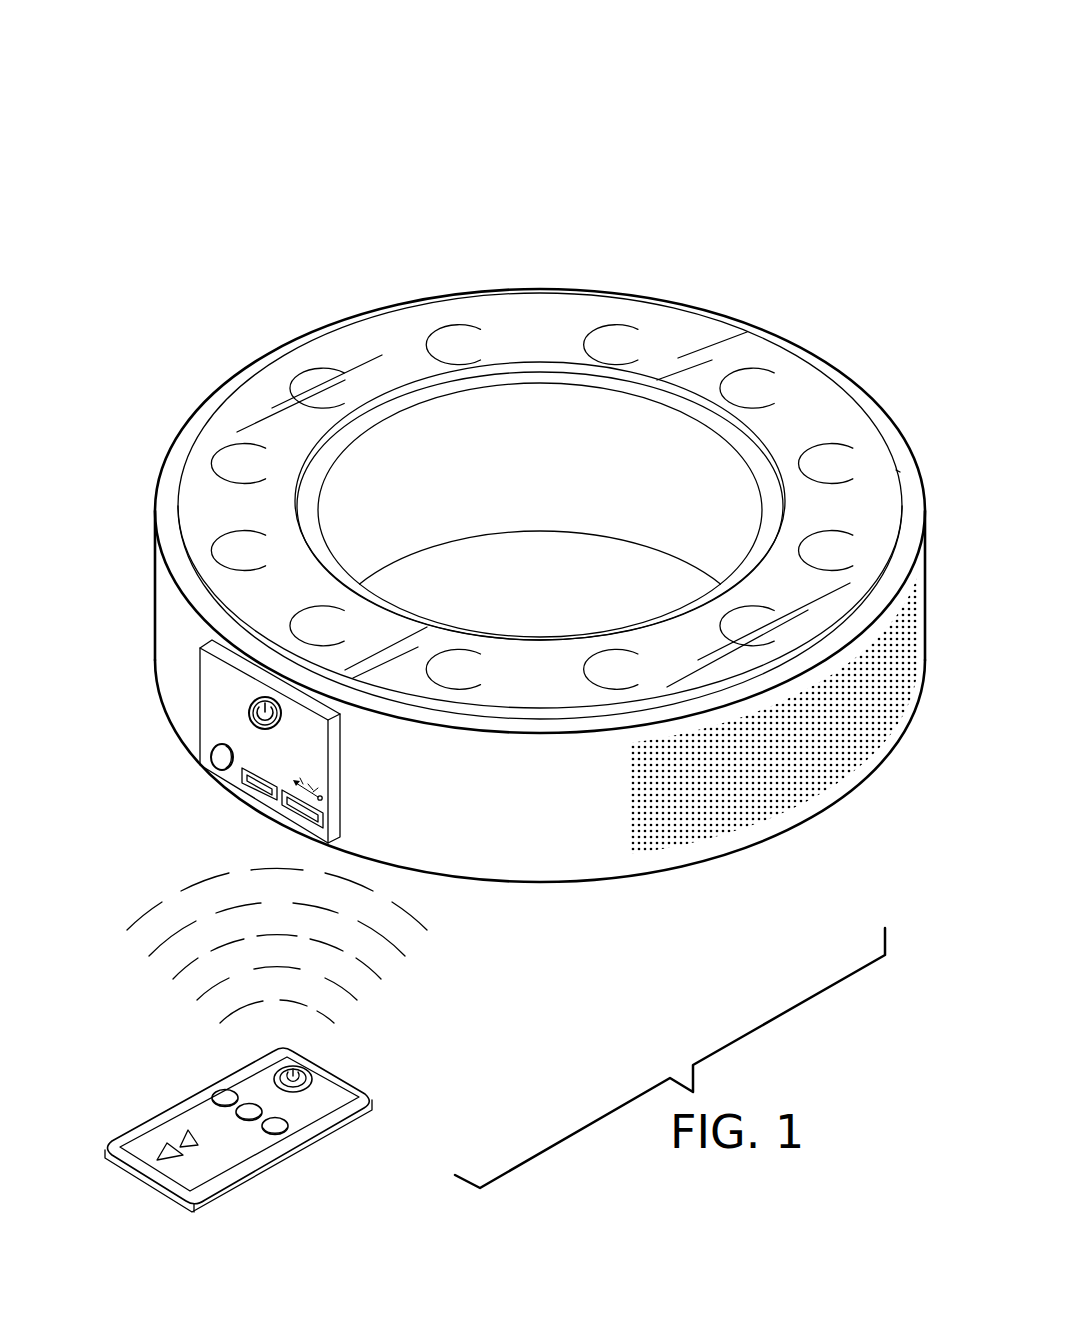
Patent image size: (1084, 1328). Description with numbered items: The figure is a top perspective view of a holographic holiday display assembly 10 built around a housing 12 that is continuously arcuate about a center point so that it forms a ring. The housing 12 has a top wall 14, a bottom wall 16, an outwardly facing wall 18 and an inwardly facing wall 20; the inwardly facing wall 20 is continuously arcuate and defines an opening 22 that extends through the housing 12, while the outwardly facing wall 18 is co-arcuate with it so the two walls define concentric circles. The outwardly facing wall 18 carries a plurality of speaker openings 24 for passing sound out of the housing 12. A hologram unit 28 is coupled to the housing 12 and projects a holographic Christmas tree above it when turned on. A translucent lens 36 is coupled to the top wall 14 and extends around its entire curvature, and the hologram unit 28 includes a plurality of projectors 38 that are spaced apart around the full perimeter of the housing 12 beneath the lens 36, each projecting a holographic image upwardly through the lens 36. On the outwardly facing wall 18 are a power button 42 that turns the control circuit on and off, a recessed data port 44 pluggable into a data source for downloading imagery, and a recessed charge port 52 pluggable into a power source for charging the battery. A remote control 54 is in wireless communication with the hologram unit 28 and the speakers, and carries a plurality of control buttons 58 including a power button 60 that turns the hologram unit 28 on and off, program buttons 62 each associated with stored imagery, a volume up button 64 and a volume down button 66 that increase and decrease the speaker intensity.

The holographic holiday display assembly 10 is at (294, 143).
The housing 12 is at (155, 532).
The top wall 14 is at (175, 460).
The bottom wall 16 is at (192, 738).
The outwardly facing wall 18 is at (515, 840).
The inwardly facing wall 20 is at (490, 425).
The opening 22 is at (576, 432).
The speaker openings 24 is at (760, 805).
The hologram unit 28 is at (303, 358).
The lens 36 is at (898, 475).
The projectors 38 is at (832, 446).
The power button 42 is at (250, 712).
The data port 44 is at (285, 815).
The charge port 52 is at (245, 790).
The remote control 54 is at (370, 1090).
The control buttons 58 is at (305, 1112).
The power button 60 is at (300, 1074).
The program buttons 62 is at (248, 1105).
The volume up button 64 is at (178, 1132).
The volume down button 66 is at (155, 1148).